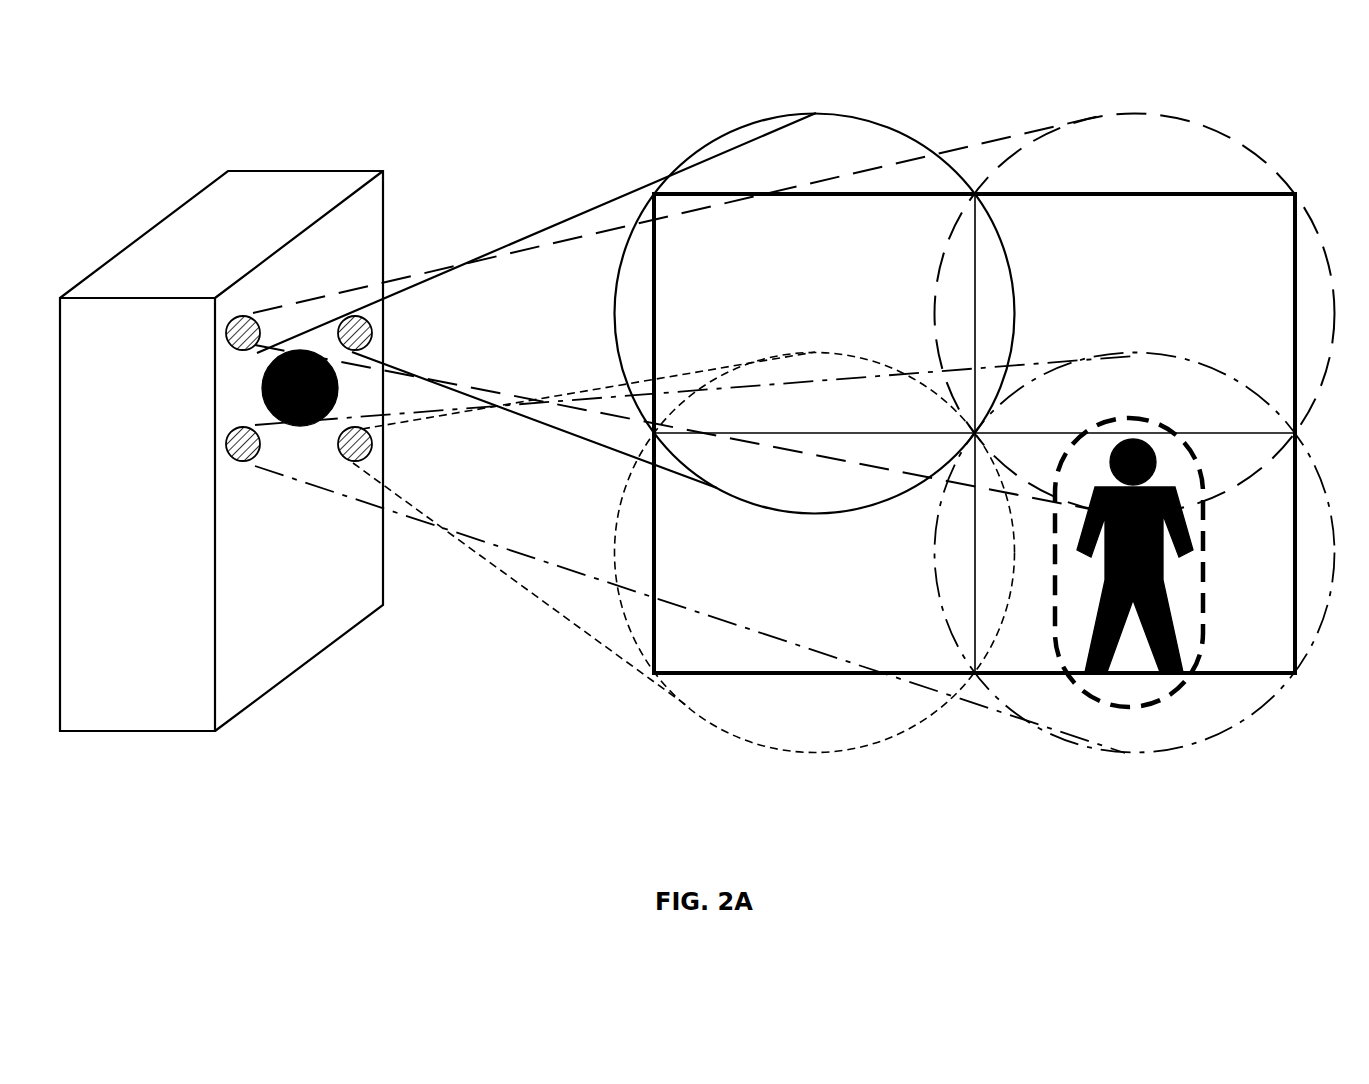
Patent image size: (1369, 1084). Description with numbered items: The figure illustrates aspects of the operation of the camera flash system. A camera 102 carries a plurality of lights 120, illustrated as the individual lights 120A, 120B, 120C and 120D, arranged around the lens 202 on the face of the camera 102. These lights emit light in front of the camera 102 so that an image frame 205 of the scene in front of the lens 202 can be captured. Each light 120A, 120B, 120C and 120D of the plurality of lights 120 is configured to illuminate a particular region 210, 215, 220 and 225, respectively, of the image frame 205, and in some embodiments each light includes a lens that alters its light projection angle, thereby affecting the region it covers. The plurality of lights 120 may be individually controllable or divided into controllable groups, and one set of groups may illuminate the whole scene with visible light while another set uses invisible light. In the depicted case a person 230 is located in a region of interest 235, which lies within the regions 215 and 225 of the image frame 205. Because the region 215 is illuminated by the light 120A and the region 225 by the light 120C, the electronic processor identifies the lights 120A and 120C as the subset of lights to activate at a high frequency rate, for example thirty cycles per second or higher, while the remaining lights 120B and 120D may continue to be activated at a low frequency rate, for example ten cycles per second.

The camera 102 is at (150, 240).
The plurality of lights 120 is at (309, 315).
The light 120A is at (241, 316).
The light 120B is at (372, 333).
The light 120C is at (241, 462).
The light 120D is at (372, 445).
The lens 202 is at (262, 397).
The image frame 205 is at (707, 192).
The region 210 is at (910, 136).
The region 215 is at (1253, 154).
The region 220 is at (815, 754).
The region 225 is at (1133, 755).
The person 230 is at (1167, 678).
The region of interest 235 is at (1133, 416).